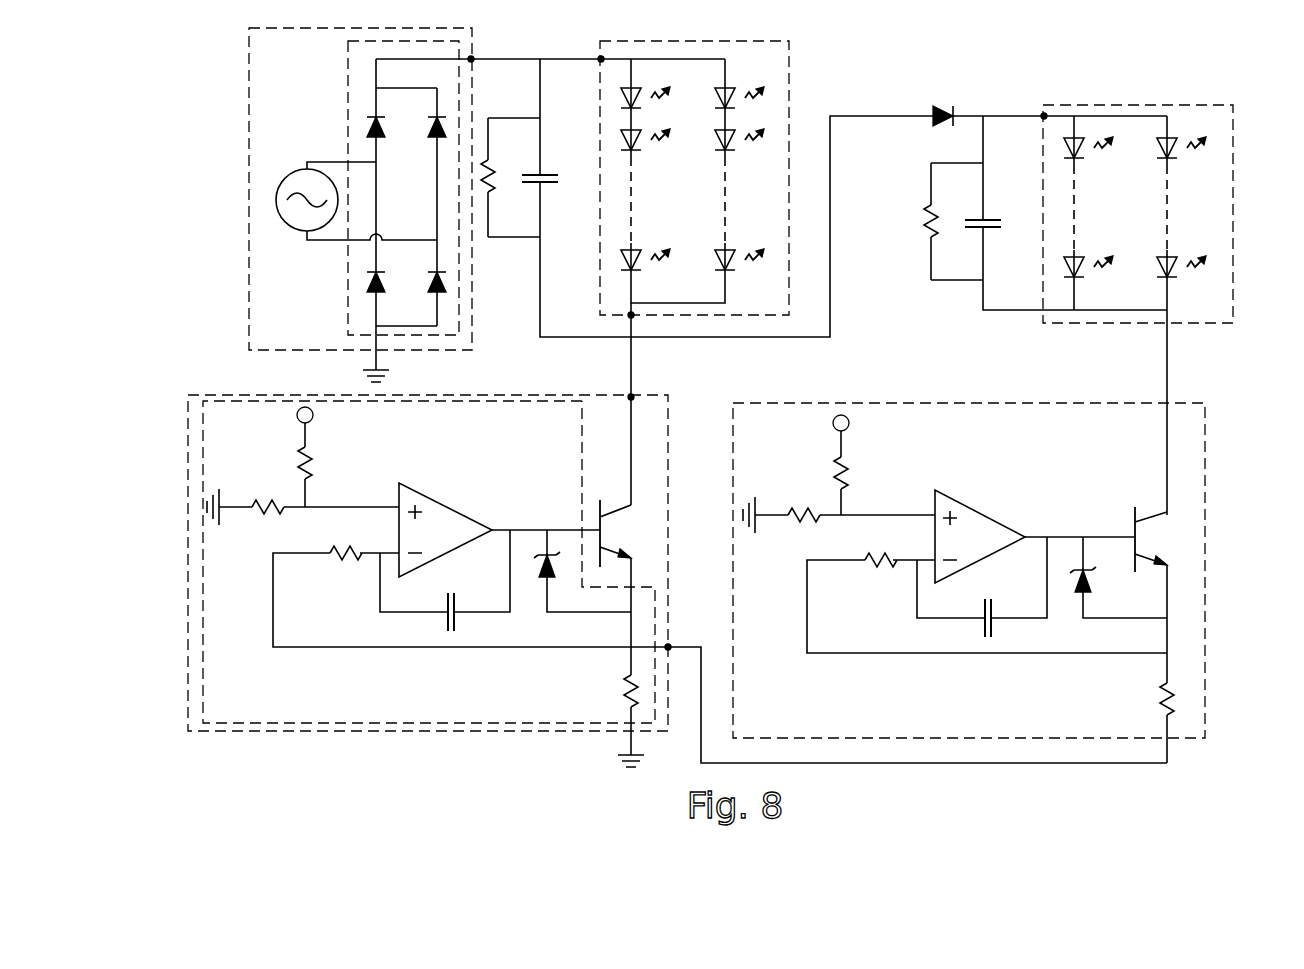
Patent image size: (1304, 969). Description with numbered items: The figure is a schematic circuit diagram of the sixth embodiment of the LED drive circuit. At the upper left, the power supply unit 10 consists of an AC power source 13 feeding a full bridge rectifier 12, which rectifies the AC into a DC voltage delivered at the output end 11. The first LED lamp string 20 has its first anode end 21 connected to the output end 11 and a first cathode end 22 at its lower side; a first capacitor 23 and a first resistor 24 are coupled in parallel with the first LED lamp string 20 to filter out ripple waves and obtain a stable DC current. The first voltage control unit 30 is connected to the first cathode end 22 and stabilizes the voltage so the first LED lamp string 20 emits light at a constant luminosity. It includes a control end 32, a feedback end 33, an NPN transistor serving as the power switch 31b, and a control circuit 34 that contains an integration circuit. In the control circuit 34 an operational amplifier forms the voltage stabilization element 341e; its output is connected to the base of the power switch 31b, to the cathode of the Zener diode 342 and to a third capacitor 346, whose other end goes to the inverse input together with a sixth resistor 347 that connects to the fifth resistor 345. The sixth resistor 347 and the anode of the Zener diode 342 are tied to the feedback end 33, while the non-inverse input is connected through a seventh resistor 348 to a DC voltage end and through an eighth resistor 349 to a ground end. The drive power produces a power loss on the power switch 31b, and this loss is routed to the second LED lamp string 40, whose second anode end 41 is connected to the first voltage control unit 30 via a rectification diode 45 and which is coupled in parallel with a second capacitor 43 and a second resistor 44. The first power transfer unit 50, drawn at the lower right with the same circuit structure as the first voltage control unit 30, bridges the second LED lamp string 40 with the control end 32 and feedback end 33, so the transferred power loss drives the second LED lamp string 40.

The power supply unit 10 is at (240, 92).
The output end 11 is at (474, 58).
The full bridge rectifier 12 is at (405, 41).
The AC power source 13 is at (277, 198).
The first LED lamp string 20 is at (722, 38).
The first anode end 21 is at (599, 58).
The first cathode end 22 is at (634, 315).
The first capacitor 23 is at (544, 175).
The first resistor 24 is at (489, 200).
The first voltage control unit 30 is at (178, 556).
The power switch 31b is at (632, 527).
The control end 32 is at (628, 396).
The feedback end 33 is at (670, 645).
The control circuit 34 is at (256, 397).
The voltage stabilization element 341e is at (448, 503).
The Zener diode 342 is at (545, 585).
The fifth resistor 345 is at (613, 700).
The third capacitor 346 is at (458, 617).
The sixth resistor 347 is at (345, 565).
The seventh resistor 348 is at (320, 468).
The eighth resistor 349 is at (265, 520).
The second LED lamp string 40 is at (1163, 100).
The second anode end 41 is at (1042, 115).
The second capacitor 43 is at (987, 220).
The second resistor 44 is at (929, 243).
The rectification diode 45 is at (945, 106).
The first power transfer unit 50 is at (1215, 545).